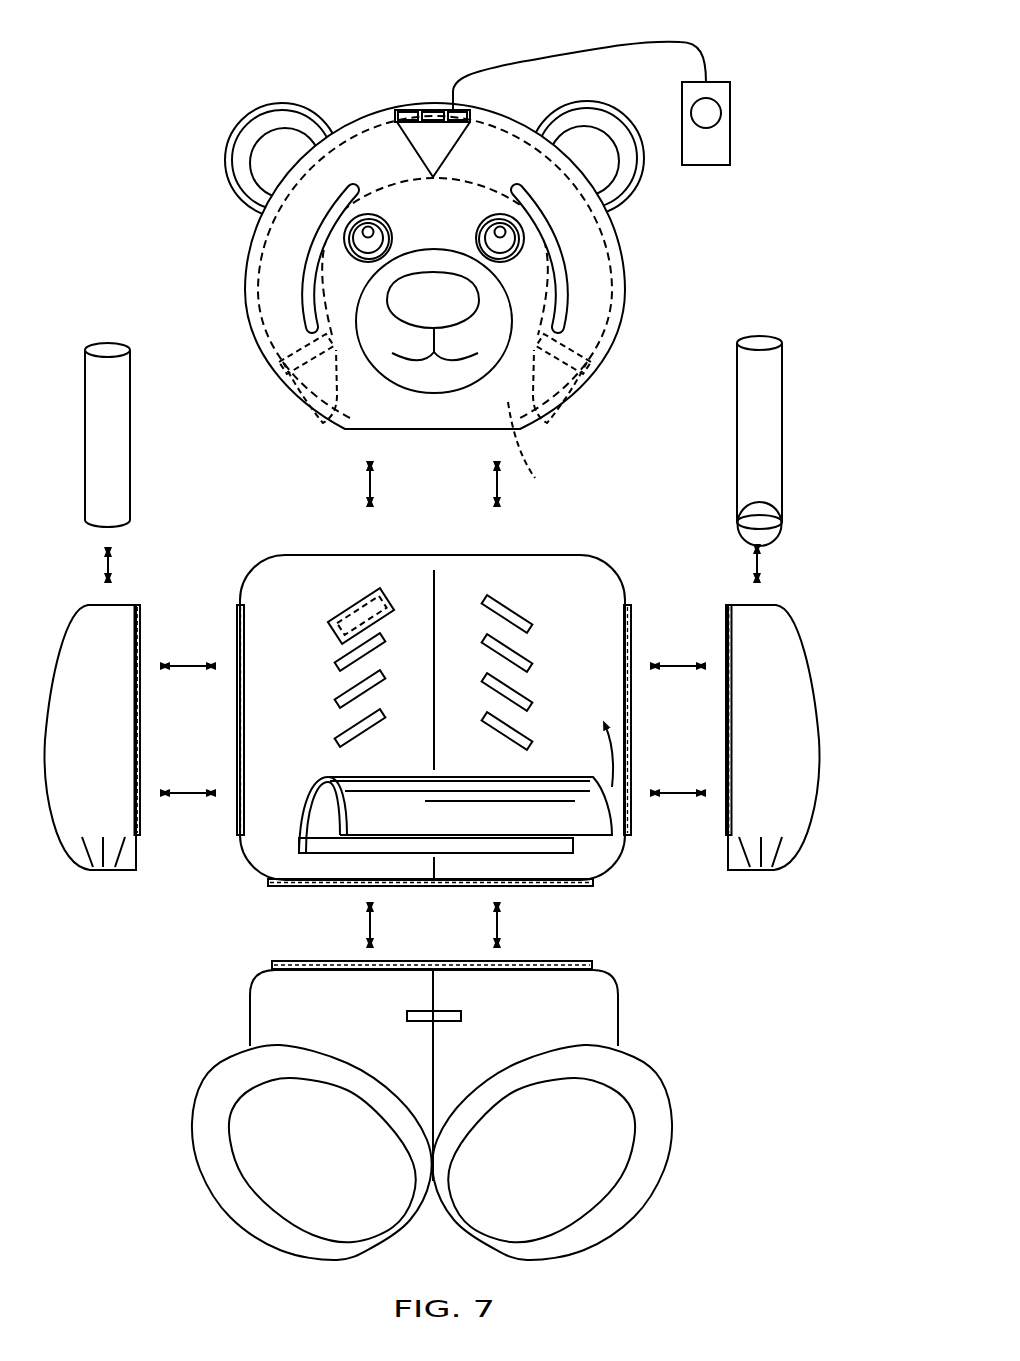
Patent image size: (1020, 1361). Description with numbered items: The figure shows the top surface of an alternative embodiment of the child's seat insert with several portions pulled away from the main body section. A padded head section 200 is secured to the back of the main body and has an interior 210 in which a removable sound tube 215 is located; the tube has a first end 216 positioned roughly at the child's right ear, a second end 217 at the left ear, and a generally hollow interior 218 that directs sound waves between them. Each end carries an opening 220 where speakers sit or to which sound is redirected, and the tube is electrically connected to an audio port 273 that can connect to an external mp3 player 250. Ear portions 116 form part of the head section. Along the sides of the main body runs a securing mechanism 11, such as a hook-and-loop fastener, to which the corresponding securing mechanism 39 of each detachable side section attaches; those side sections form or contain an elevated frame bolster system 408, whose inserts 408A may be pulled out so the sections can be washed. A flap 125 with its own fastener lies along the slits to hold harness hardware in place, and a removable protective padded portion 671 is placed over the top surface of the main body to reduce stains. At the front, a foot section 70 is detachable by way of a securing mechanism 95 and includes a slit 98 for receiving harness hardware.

The ear portion 116 is at (283, 115).
The audio port 273 is at (413, 108).
The generally hollow interior 218 is at (490, 153).
The external mp3 player 250 is at (733, 120).
The head section 200 is at (440, 280).
The removable sound tube 215 is at (628, 292).
The first end 216 is at (285, 386).
The second end 217 is at (575, 400).
The opening 220 is at (322, 420).
The interior 210 is at (542, 450).
The inserts 408A is at (113, 437).
The flap 125 is at (397, 592).
The securing mechanism 39 is at (140, 657).
The securing mechanism 11 is at (454, 702).
The elevated frame bolster system 408 is at (432, 698).
The removable protective padded portion 671 is at (588, 822).
The securing mechanism 95 is at (318, 962).
The slit 98 is at (438, 1010).
The foot section 70 is at (463, 1083).